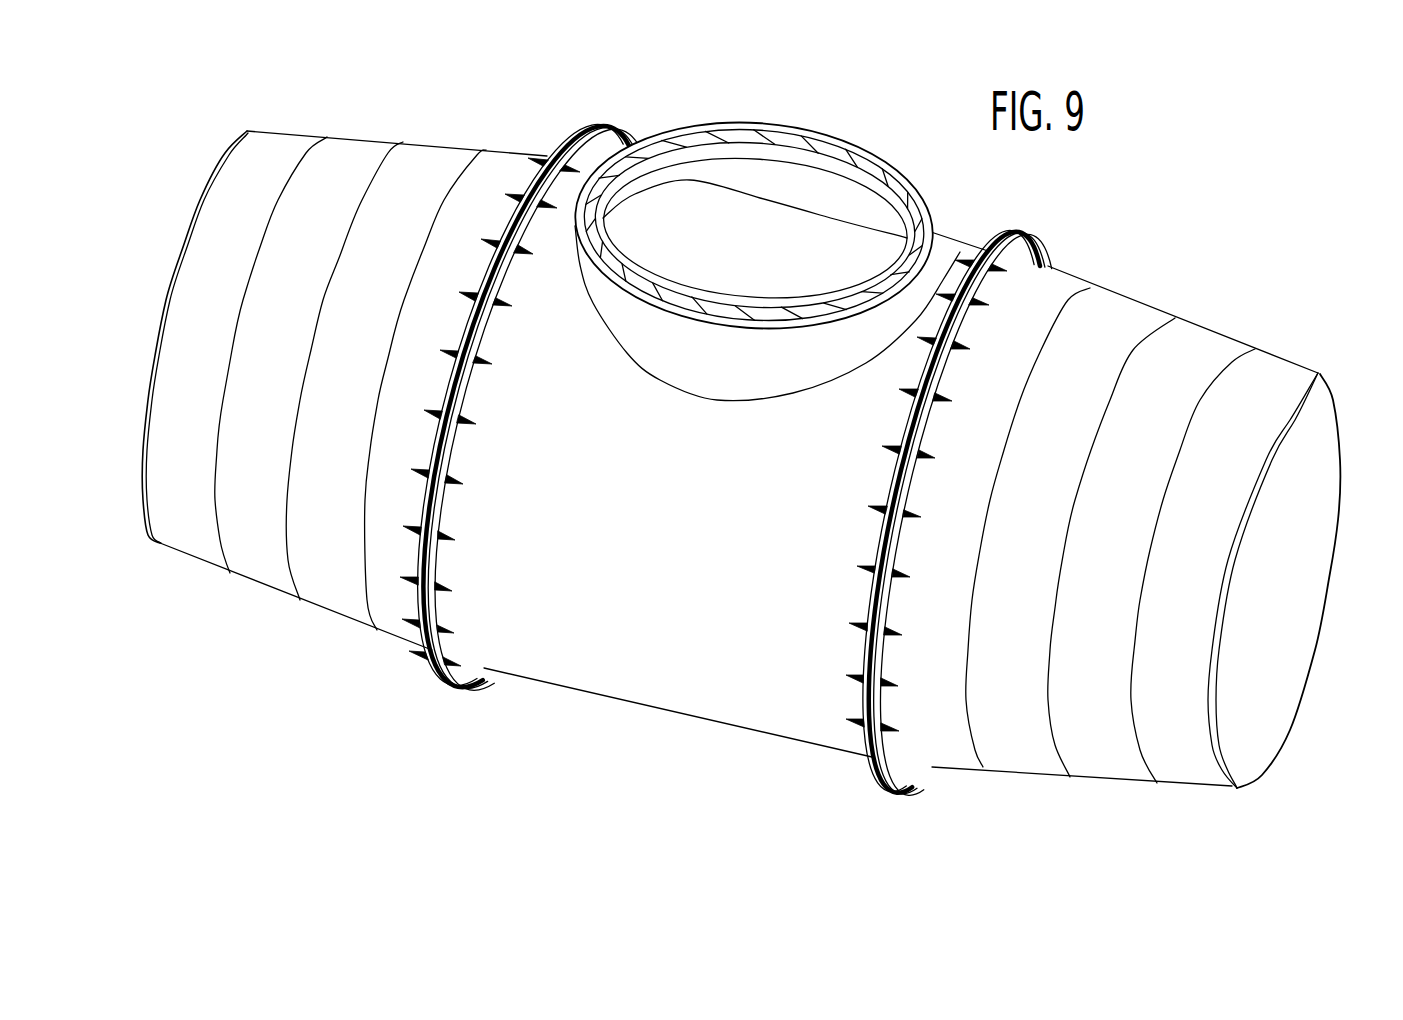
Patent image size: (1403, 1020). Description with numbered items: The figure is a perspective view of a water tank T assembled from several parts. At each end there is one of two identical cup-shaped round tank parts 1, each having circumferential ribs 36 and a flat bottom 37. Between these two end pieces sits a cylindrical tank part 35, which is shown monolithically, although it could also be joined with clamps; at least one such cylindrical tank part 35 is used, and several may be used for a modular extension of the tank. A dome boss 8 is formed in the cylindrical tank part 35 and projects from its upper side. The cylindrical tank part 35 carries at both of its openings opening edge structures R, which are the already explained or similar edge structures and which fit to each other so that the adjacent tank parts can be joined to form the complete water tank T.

The tank part 1 is at (336, 598).
The dome boss 8 is at (651, 354).
The cylindrical tank part 35 is at (572, 656).
The circumferential ribs 36 is at (289, 553).
The flat bottom 37 is at (1312, 575).
The opening edge structures R is at (442, 521).
The water tank T is at (1168, 259).